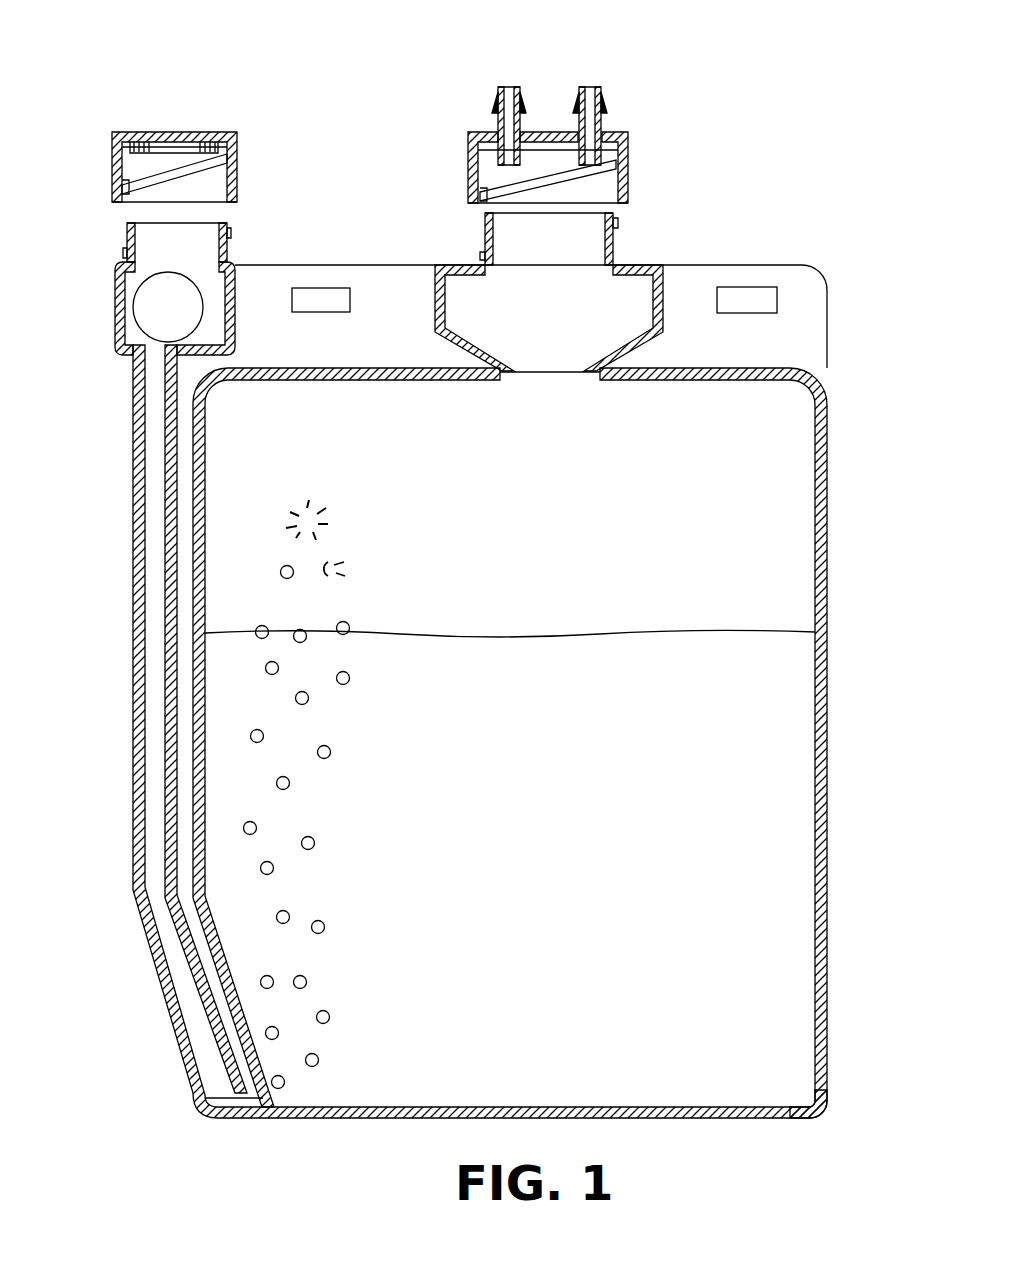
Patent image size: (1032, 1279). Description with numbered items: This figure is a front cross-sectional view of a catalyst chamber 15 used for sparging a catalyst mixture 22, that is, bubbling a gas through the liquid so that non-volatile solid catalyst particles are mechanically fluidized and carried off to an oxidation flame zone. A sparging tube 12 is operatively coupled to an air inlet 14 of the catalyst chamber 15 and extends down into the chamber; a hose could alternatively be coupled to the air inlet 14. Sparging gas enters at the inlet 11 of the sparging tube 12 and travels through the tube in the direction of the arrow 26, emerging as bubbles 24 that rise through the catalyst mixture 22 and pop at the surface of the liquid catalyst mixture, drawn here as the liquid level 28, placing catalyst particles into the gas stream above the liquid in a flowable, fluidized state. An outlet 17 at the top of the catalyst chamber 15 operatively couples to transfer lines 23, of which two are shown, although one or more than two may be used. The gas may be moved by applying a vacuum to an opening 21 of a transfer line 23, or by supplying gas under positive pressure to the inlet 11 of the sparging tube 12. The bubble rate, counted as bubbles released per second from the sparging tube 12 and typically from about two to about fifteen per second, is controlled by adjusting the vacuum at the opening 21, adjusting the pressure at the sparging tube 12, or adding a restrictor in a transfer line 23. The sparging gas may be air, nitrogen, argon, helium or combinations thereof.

The inlet of the sparging tube 11 is at (178, 132).
The sparging tube 12 is at (133, 640).
The air inlet 14 is at (270, 1098).
The catalyst chamber 15 is at (831, 499).
The outlet 17 is at (553, 378).
The opening of a transfer line 21 is at (506, 98).
The catalyst mixture 22 is at (638, 804).
The transfer lines 23 is at (497, 100).
The bubbles 24 is at (331, 750).
The arrow 26 is at (155, 702).
The liquid level 28 is at (600, 633).